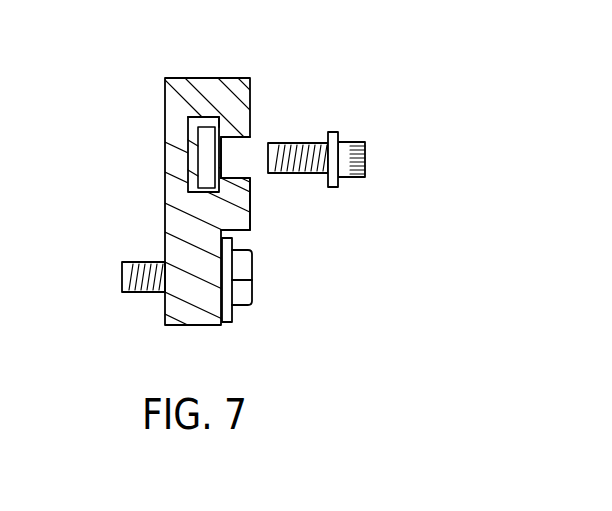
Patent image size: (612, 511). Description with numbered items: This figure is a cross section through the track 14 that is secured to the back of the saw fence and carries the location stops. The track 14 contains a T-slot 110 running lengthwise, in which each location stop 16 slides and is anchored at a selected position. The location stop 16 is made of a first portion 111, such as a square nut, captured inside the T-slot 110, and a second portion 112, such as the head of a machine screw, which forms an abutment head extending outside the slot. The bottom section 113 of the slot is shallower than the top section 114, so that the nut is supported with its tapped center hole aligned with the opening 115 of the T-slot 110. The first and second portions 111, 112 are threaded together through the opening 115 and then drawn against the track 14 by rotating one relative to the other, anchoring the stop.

The track 14 is at (247, 207).
The location stop 16 is at (365, 160).
The T-slot 110 is at (244, 138).
The first portion 111 is at (207, 148).
The second portion 112 is at (352, 178).
The bottom section 113 is at (167, 163).
The top section 114 is at (208, 117).
The opening 115 is at (240, 182).